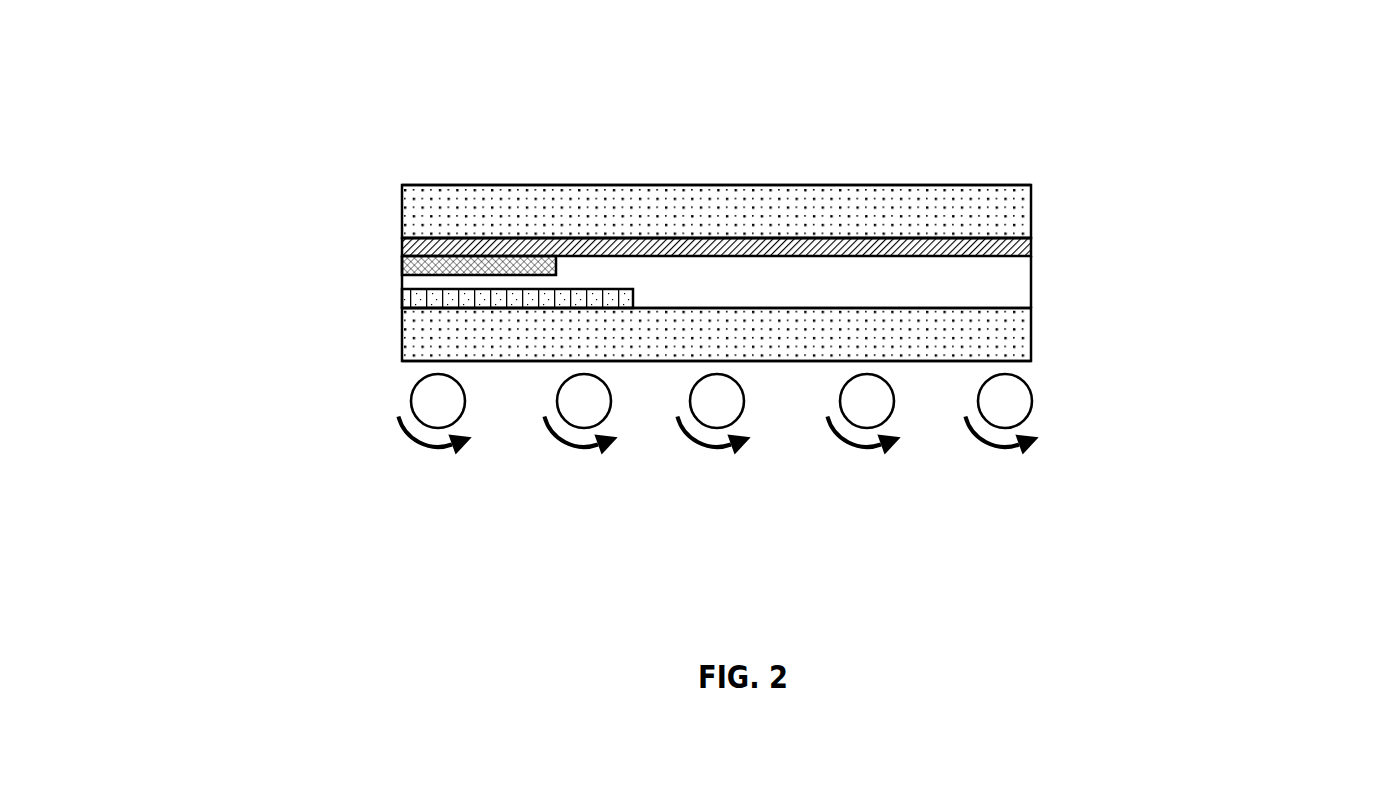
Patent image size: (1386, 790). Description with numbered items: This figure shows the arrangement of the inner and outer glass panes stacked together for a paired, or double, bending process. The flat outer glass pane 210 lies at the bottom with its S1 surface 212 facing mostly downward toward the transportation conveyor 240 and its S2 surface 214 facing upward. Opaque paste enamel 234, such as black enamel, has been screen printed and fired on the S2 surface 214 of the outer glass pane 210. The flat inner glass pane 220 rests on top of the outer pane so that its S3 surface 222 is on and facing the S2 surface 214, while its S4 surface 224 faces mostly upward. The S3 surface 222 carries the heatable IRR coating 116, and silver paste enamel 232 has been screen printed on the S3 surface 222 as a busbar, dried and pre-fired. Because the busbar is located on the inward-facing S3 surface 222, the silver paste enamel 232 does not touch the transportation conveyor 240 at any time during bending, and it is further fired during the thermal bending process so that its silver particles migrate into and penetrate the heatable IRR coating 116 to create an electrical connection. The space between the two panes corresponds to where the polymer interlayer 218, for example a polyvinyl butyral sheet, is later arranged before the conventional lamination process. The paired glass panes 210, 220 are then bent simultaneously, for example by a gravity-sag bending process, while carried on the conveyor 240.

The heatable IRR coating 116 is at (427, 243).
The outer glass pane 210 is at (997, 347).
The S1 surface 212 is at (745, 362).
The S2 surface 214 is at (997, 309).
The polymer interlayer 218 is at (1015, 285).
The inner glass pane 220 is at (935, 208).
The S3 surface 222 is at (1020, 238).
The S4 surface 224 is at (841, 187).
The silver paste enamel 232 is at (420, 268).
The opaque paste enamel 234 is at (430, 298).
The transportation conveyor 240 is at (583, 400).